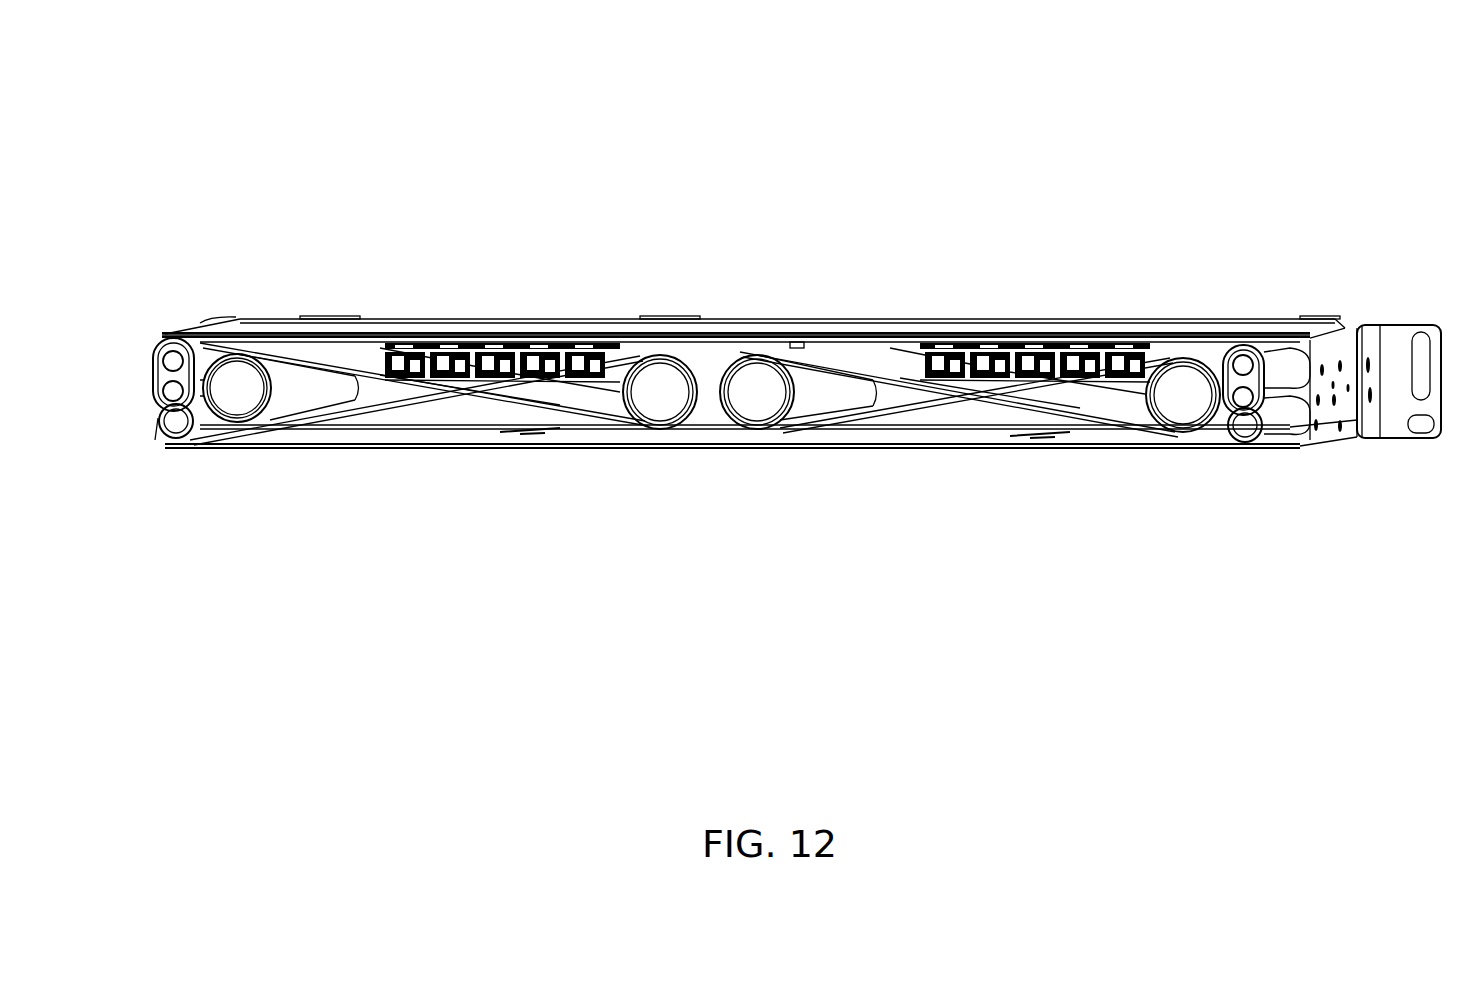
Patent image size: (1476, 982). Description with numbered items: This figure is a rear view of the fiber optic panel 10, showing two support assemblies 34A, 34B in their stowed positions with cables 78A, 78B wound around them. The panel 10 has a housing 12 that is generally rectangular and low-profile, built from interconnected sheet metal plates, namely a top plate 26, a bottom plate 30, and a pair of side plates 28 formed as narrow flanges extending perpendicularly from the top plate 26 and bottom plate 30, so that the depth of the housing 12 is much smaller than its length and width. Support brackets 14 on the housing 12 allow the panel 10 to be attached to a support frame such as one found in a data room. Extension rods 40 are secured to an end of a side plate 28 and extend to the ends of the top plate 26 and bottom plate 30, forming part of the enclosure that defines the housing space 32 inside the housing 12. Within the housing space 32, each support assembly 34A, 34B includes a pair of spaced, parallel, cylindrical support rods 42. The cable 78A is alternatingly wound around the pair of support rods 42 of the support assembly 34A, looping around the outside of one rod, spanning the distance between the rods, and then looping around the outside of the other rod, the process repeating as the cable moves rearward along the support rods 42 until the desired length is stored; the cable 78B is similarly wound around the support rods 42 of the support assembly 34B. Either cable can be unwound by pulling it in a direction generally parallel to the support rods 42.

The fiber optic panel 10 is at (265, 120).
The housing 12 is at (607, 330).
The support brackets 14 is at (1400, 435).
The top plate 26 is at (975, 336).
The side plates 28 is at (1330, 425).
The bottom plate 30 is at (1050, 430).
The housing space 32 is at (437, 438).
The support assembly 34A is at (1128, 497).
The support assembly 34B is at (492, 482).
The extension rods 40 is at (200, 345).
The support rods 42 is at (237, 405).
The cable 78A is at (910, 405).
The cable 78B is at (362, 410).